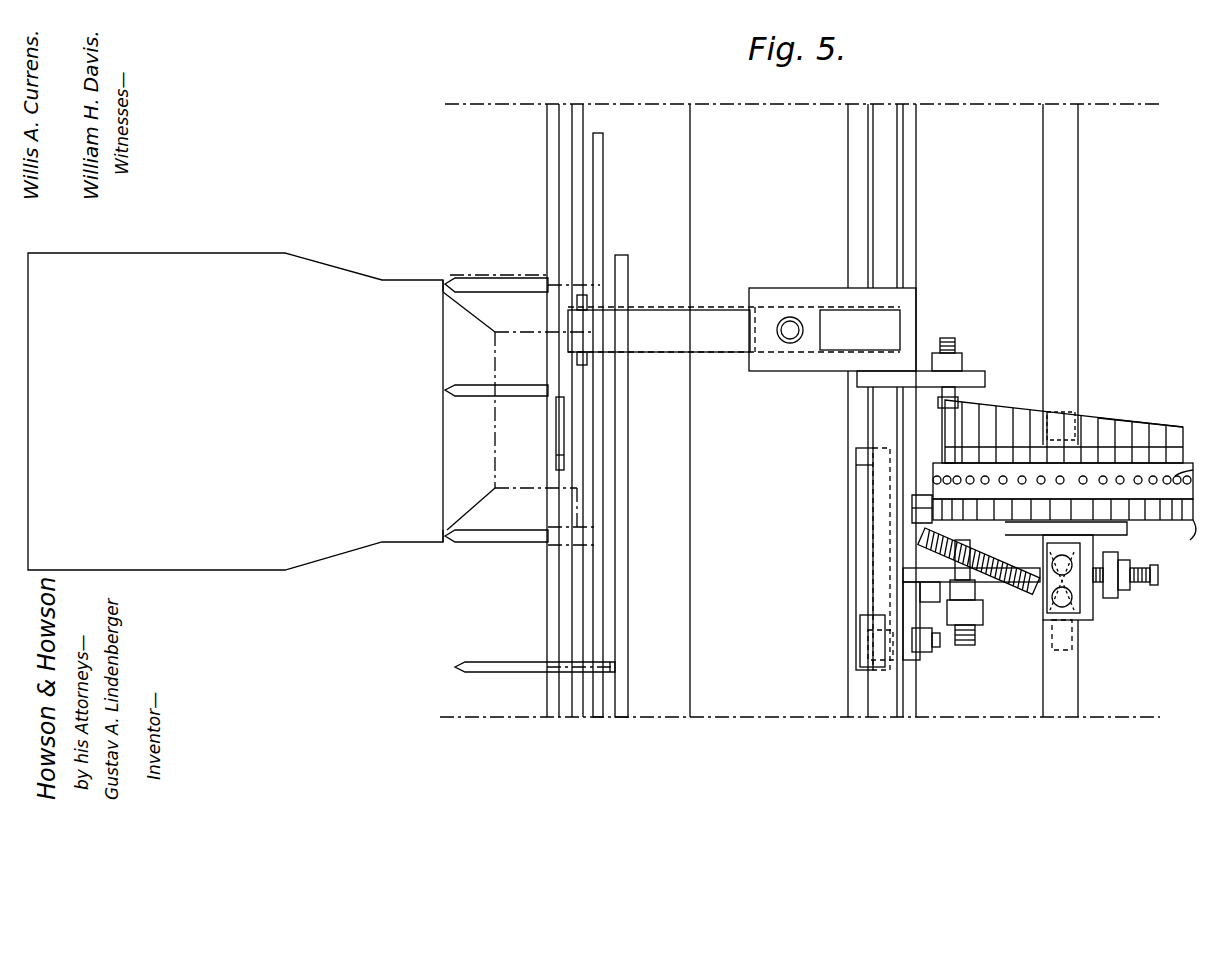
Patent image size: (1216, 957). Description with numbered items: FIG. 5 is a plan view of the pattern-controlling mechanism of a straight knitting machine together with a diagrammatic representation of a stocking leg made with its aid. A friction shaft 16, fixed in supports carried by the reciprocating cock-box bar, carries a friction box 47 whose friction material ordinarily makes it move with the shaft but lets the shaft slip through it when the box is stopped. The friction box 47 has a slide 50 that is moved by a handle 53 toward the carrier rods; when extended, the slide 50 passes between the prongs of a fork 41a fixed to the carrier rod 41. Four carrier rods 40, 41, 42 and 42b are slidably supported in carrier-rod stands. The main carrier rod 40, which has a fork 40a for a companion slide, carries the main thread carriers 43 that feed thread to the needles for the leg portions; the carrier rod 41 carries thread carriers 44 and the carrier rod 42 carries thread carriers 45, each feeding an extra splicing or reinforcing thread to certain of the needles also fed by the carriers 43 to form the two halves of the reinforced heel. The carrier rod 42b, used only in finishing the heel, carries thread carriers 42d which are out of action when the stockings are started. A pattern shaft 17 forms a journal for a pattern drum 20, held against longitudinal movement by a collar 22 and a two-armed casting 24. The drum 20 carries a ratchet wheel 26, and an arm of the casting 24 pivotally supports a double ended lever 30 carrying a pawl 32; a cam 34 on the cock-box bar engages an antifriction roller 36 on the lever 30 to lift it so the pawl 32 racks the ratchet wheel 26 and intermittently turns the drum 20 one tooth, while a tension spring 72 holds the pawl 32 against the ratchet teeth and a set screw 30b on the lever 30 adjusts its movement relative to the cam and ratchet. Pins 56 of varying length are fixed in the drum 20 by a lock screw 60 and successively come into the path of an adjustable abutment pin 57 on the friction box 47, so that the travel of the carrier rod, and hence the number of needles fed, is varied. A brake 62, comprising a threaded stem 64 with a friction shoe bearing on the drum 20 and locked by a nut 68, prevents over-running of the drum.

The friction shaft 16 is at (886, 398).
The pattern shaft 17 is at (1079, 336).
The pattern drum 20 is at (1063, 491).
The collar 22 is at (1023, 435).
The two-armed casting 24 is at (1090, 618).
The ratchet wheel 26 is at (1190, 540).
The double ended lever 30 is at (1115, 590).
The adjusting or set screw 30b is at (1158, 578).
The pawl 32 is at (915, 508).
The cam 34 is at (862, 537).
The antifriction roller 36 is at (860, 626).
The main carrier rod 40 is at (550, 637).
The fork 40a is at (558, 442).
The carrier rod 41 is at (575, 622).
The fork 41a is at (585, 360).
The carrier rod 42 is at (597, 599).
The carrier rod 42b is at (621, 606).
The thread carrier 42d is at (480, 665).
The yarn guide or thread carrier 43 is at (467, 388).
The yarn guide or thread carrier 44 is at (488, 289).
The yarn guide or thread carrier 45 is at (462, 545).
The friction box 47 is at (808, 290).
The slide 50 is at (661, 326).
The handle 53 is at (790, 318).
The pins 56 is at (1118, 425).
The adjustable abutment pin 57 is at (950, 352).
The lock screw 60 is at (1193, 470).
The brake 62 is at (985, 546).
The threaded stem 64 is at (962, 642).
The nut 68 is at (983, 607).
The tension spring 72 is at (1008, 565).